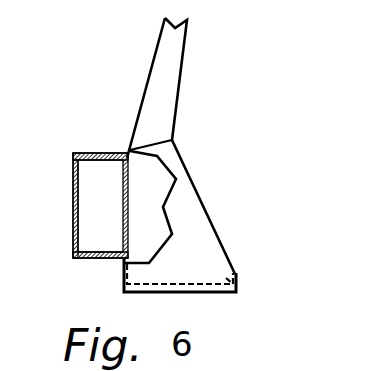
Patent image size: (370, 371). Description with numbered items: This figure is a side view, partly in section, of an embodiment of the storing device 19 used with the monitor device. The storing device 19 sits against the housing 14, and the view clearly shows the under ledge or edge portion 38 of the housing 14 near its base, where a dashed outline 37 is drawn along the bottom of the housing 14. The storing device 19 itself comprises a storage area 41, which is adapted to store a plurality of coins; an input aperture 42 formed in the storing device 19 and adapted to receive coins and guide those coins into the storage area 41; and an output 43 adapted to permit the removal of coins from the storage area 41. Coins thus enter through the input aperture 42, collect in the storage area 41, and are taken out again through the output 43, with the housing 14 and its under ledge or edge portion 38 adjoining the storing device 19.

The housing 14 is at (188, 213).
The storing device 19 is at (111, 213).
The dashed bottom plate 37 is at (176, 262).
The under ledge or edge portion 38 is at (232, 277).
The storage area 41 is at (91, 226).
The input aperture 42 is at (99, 153).
The output 43 is at (97, 260).